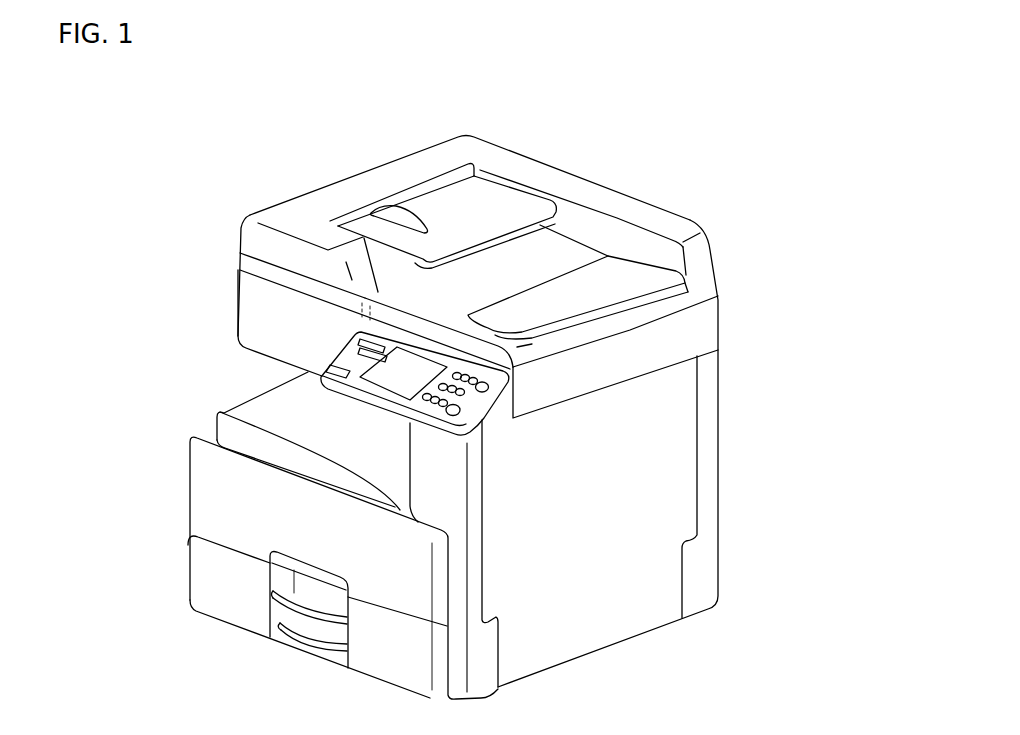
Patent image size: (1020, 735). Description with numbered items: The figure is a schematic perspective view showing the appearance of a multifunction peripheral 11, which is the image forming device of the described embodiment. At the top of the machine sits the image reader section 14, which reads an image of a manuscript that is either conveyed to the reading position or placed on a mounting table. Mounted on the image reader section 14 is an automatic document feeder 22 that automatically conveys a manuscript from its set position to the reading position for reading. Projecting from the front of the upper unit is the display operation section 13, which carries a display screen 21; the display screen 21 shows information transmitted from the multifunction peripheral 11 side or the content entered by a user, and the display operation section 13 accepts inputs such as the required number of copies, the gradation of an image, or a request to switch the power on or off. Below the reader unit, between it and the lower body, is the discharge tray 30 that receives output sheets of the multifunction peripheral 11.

The multifunction peripheral 11 is at (722, 101).
The display operation section 13 is at (327, 340).
The image reader section 14 is at (775, 195).
The display screen 21 is at (330, 361).
The automatic document feeder (ADF) 22 is at (586, 222).
The discharge tray 30 is at (307, 421).